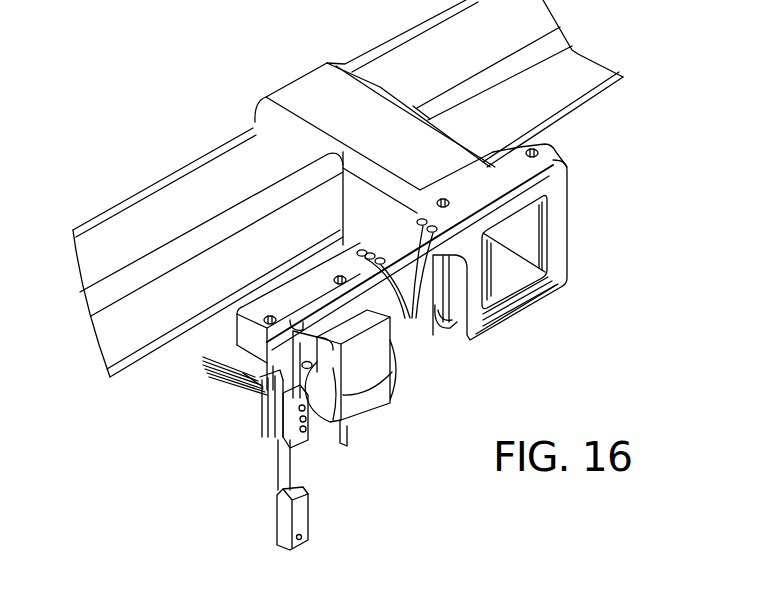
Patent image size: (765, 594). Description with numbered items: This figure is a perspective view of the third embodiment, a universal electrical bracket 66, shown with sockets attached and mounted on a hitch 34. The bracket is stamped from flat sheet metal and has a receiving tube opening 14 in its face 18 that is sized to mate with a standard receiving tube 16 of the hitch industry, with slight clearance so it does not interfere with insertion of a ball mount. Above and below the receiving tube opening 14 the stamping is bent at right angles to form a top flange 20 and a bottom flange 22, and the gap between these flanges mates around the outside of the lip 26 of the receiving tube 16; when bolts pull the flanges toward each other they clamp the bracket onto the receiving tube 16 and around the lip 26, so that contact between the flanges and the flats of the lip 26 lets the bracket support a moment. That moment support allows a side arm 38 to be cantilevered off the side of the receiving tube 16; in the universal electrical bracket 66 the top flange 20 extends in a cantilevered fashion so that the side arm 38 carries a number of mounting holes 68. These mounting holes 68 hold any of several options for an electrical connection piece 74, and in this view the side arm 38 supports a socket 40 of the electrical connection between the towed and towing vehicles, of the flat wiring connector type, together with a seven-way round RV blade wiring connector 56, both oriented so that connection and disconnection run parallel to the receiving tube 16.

The receiving tube opening 14 is at (510, 267).
The receiving tube 16 is at (320, 110).
The face 18 is at (560, 218).
The top flange 20 is at (493, 180).
The bottom flange 22 is at (446, 326).
The lip 26 is at (448, 316).
The hitch 34 is at (153, 205).
The side arm 38 is at (380, 240).
The socket 40 is at (305, 430).
The 7-way round RV blade wiring connector 56 is at (367, 397).
The universal electrical bracket 66 is at (593, 152).
The mounting holes 68 is at (397, 278).
The electrical connection piece 74 is at (247, 327).